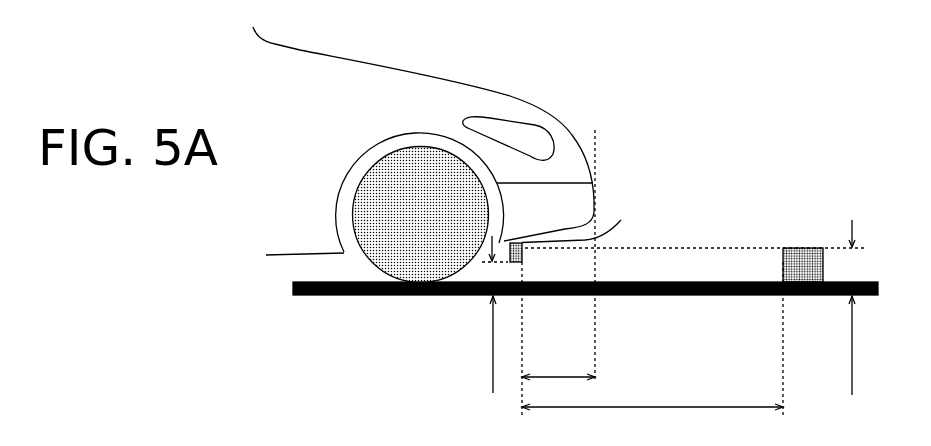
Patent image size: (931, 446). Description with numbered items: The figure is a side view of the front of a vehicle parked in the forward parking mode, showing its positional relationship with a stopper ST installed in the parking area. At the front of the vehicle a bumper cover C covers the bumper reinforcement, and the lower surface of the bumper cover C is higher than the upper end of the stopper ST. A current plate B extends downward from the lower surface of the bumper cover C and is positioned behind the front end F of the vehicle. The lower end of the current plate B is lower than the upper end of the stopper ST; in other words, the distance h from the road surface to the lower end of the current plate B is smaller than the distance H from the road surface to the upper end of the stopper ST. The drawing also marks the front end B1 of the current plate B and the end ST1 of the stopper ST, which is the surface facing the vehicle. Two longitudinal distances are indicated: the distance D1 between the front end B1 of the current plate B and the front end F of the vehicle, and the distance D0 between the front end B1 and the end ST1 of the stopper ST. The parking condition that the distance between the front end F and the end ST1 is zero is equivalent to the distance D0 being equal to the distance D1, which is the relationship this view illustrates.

The bumper cover C is at (550, 205).
The front end of the vehicle F is at (597, 194).
The current plate B is at (570, 218).
The front end of the current plate B1 is at (523, 250).
The stopper ST is at (807, 261).
The end of the stopper ST1 is at (782, 261).
The distance from the road surface to the lower end of the current plate h is at (482, 314).
The distance from the road surface to the upper end of the stopper H is at (868, 345).
The distance between the front end of the current plate and the front end of the veh D1 is at (558, 361).
The distance between the front end of the current plate and the end of the stopper D0 is at (652, 394).